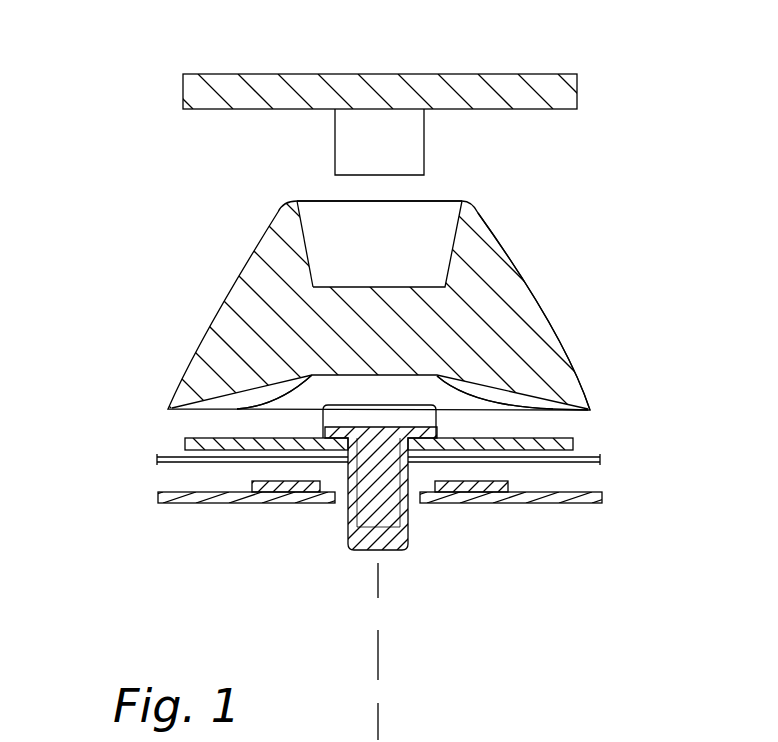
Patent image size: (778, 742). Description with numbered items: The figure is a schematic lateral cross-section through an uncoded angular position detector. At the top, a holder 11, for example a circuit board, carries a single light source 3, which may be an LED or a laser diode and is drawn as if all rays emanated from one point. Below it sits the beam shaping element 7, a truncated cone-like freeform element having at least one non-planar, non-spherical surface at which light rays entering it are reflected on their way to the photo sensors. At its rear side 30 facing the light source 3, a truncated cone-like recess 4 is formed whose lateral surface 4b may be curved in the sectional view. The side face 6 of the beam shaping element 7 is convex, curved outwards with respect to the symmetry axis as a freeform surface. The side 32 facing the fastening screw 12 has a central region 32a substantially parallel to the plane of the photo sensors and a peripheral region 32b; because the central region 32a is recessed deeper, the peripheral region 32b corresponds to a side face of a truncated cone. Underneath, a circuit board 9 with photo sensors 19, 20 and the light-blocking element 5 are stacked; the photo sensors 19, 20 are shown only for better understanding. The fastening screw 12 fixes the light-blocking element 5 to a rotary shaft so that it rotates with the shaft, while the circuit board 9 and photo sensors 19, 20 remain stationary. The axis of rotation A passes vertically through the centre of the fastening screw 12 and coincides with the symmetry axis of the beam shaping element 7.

The holder 11 is at (562, 75).
The light source 3 is at (422, 157).
The beam shaping element 7 is at (548, 322).
The recess 4 is at (463, 223).
The rear side 30 is at (300, 200).
The lateral surface 4b is at (290, 224).
The side face 6 is at (573, 375).
The side 32 is at (243, 410).
The peripheral region 32b is at (187, 378).
The central region 32a is at (590, 410).
The photo sensor 20 is at (499, 489).
The fastening screw 12 is at (410, 417).
The light-blocking element 5 is at (207, 441).
The circuit board 9 is at (203, 502).
The photo sensor 19 is at (297, 486).
The axis of rotation A is at (378, 662).